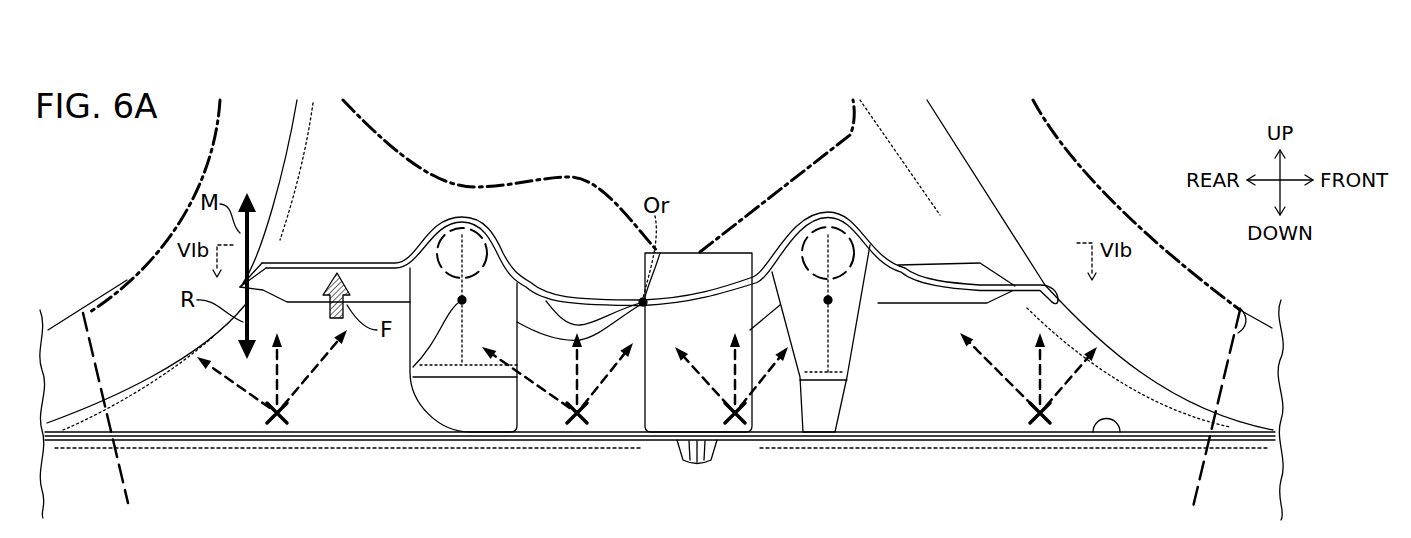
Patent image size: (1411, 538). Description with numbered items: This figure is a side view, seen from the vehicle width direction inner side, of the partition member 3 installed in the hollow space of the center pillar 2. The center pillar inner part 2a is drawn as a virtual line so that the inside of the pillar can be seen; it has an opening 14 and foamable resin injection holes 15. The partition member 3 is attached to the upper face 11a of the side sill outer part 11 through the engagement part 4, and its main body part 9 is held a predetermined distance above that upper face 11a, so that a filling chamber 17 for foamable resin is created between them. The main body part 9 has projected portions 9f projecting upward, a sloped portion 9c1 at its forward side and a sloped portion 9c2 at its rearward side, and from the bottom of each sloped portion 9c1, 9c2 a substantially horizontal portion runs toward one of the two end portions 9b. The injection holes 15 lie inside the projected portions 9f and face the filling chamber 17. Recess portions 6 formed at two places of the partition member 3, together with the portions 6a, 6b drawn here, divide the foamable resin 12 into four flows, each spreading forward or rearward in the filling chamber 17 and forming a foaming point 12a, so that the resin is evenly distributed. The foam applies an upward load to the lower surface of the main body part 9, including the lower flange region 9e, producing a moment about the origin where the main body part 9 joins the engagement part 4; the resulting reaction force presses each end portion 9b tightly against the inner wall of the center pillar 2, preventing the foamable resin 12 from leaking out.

The center pillar 2 is at (1110, 203).
The center pillar inner part 2a is at (1262, 313).
The partition member 3 is at (596, 218).
The engagement part 4 is at (663, 390).
The recess portions 6 is at (490, 300).
The side panel upper portion 6b is at (855, 382).
The side panel hinge portion 6a is at (412, 367).
The main body part 9 is at (597, 290).
The end portions 9b is at (270, 282).
The sloped portion 9c1 is at (880, 217).
The sloped portion 9c2 is at (422, 200).
The lower flange 9e is at (300, 304).
The projected portions 9f is at (457, 217).
The side sill outer part 11 is at (660, 472).
The upper face 11a is at (1110, 432).
The foamable resin 12 is at (240, 392).
The foaming point 12a is at (279, 423).
The opening 14 is at (747, 215).
The foamable resin injection holes 15 is at (420, 228).
The filling chamber 17 is at (962, 388).